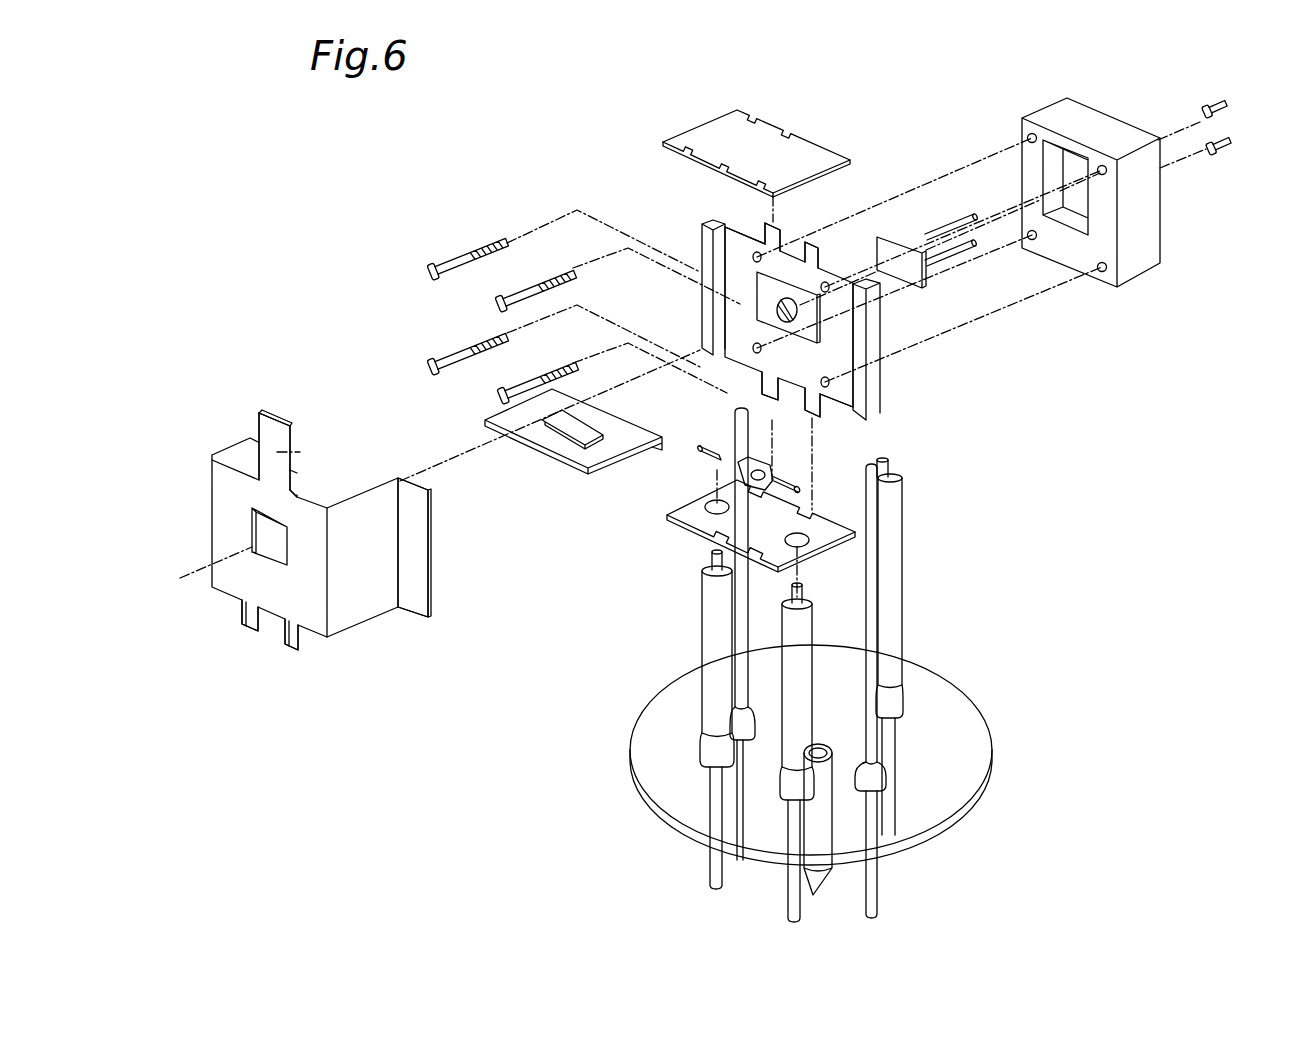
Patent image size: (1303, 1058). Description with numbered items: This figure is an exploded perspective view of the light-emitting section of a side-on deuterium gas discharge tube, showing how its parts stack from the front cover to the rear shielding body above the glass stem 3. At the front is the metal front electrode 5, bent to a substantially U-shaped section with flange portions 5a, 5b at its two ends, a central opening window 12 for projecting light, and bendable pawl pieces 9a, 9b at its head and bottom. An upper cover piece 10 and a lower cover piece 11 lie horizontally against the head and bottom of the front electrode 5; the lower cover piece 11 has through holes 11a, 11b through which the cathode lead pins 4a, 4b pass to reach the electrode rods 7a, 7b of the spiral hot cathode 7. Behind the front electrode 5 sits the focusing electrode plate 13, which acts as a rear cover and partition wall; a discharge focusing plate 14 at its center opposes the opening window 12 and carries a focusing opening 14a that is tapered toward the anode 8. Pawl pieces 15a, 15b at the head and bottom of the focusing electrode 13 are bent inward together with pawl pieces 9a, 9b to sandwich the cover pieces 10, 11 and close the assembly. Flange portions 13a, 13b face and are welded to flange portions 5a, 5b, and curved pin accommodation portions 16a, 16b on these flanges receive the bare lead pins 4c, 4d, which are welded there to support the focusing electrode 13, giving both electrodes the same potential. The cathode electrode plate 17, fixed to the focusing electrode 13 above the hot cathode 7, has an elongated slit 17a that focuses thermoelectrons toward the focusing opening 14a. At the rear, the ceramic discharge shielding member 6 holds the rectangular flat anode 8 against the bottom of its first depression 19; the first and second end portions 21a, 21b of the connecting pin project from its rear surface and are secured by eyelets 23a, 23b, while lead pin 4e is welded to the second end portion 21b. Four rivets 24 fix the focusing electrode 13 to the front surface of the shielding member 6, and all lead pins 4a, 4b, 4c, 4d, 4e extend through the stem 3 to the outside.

The glass stem 3 is at (967, 747).
The lead pin 4a is at (682, 719).
The lead pin 4b is at (795, 695).
The lead pin 4c is at (740, 677).
The lead pin 4d is at (871, 740).
The lead pin 4e is at (889, 580).
The front electrode 5 is at (328, 551).
The flange portion 5a is at (262, 430).
The flange portion 5b is at (418, 553).
The discharge shielding member 6 is at (1115, 175).
The spiral hot cathode 7 is at (753, 476).
The electrode rod 7a is at (702, 457).
The electrode rod 7b is at (793, 485).
The anode 8 is at (883, 248).
The pawl piece 9a is at (297, 466).
The pawl piece 9b is at (288, 643).
The upper cover piece 10 is at (712, 138).
The lower cover piece 11 is at (786, 549).
The through hole 11a is at (707, 512).
The through hole 11b is at (810, 545).
The opening window 12 is at (252, 527).
The focusing electrode plate 13 is at (822, 313).
The flange portion 13a is at (718, 232).
The flange portion 13b is at (850, 410).
The discharge focusing plate 14 is at (820, 318).
The focusing opening 14a is at (822, 345).
The pawl piece 15a is at (815, 240).
The pawl piece 15b is at (822, 415).
The pin accommodation portion 16a is at (712, 247).
The pin accommodation portion 16b is at (877, 388).
The cathode electrode plate 17 is at (573, 456).
The elongated slit 17a is at (565, 427).
The first depression 19 is at (1065, 155).
The first end portion 21a is at (935, 235).
The second end portion 21b is at (963, 258).
The eyelet 23a is at (1222, 100).
The eyelet 23b is at (1228, 150).
The rivet 24 is at (517, 390).